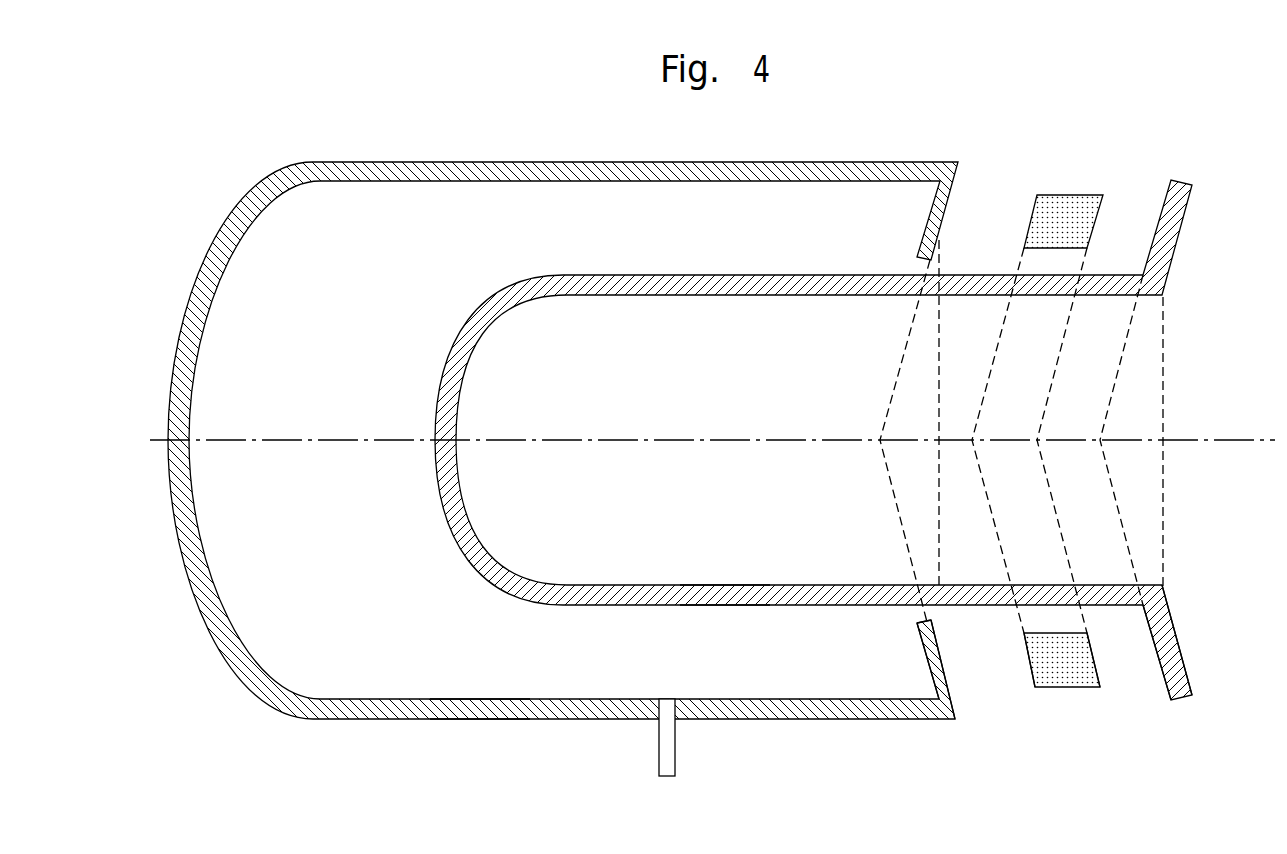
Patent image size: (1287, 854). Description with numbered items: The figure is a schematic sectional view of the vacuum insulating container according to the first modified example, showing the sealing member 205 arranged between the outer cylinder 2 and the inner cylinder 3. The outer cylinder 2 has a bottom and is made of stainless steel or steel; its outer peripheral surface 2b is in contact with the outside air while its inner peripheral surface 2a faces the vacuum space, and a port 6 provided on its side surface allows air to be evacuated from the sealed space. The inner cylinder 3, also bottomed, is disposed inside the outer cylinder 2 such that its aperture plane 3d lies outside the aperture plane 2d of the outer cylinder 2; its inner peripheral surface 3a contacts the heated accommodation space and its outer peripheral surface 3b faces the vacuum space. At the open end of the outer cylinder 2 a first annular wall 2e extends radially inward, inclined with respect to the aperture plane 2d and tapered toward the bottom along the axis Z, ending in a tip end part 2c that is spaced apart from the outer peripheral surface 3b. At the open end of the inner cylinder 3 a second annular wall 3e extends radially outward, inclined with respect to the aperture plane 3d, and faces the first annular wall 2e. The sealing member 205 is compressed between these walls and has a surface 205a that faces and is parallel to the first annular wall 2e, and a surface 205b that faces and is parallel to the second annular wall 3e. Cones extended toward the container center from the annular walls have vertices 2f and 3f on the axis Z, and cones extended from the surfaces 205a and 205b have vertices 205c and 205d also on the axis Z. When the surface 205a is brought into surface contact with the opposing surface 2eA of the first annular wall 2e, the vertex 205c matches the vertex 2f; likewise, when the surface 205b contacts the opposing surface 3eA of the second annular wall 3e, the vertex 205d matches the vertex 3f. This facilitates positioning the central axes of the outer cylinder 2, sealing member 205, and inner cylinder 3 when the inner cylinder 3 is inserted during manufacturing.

The outer cylinder 2 is at (512, 719).
The inner peripheral surface of the outer cylinder 2a is at (476, 698).
The outer peripheral surface of the outer cylinder 2b is at (474, 720).
The tip end part 2c is at (920, 620).
The aperture plane of the outer cylinder 2d is at (939, 263).
The first annular wall 2e is at (918, 652).
The opposing surface of the first annular wall 2eA is at (947, 678).
The vertex of the cone from the first annular wall 2f is at (880, 438).
The inner cylinder 3 is at (773, 585).
The inner peripheral surface of the inner cylinder 3a is at (722, 584).
The outer peripheral surface of the inner cylinder 3b is at (722, 606).
The aperture plane of the inner cylinder 3d is at (1163, 332).
The second annular wall 3e is at (1179, 641).
The opposing surface of the second annular wall 3eA is at (1151, 686).
The vertex of the cone from the second annular wall 3f is at (1100, 440).
The port 6 is at (667, 752).
The sealing member 205 is at (1060, 675).
The surface facing the first annular wall 205a is at (1025, 665).
The surface facing the second annular wall 205b is at (1102, 663).
The vertex of the cone from surface 205a 205c is at (972, 438).
The vertex of the cone from surface 205b 205d is at (1037, 440).
The axis Z is at (1192, 440).